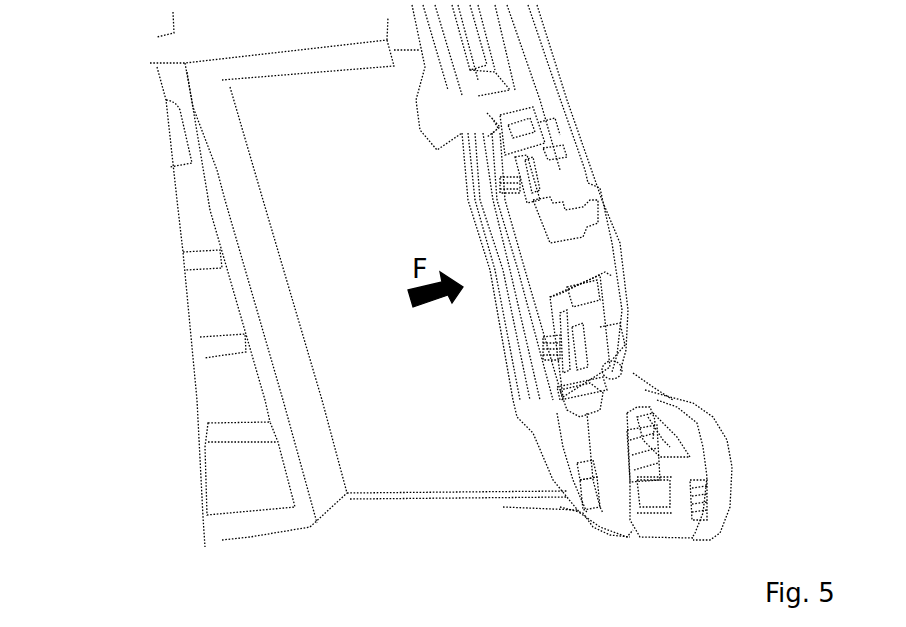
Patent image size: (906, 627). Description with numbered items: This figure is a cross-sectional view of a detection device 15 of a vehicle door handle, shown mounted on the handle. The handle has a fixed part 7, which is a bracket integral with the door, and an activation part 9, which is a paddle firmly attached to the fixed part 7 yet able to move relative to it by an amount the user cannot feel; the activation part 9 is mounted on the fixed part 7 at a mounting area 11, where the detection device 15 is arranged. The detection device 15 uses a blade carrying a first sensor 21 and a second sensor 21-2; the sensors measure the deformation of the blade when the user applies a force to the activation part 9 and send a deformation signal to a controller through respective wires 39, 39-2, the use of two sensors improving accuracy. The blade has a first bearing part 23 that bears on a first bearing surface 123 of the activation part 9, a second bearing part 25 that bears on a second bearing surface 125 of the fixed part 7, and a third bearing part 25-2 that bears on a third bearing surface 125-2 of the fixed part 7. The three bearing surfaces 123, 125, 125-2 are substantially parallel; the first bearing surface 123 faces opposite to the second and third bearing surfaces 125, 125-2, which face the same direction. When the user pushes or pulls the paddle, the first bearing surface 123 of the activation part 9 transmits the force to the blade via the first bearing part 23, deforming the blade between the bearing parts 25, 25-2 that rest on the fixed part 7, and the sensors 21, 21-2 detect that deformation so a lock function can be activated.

The fixed part 7 is at (608, 347).
The activation part 9 is at (512, 432).
The outer wall 11 is at (622, 238).
The first detection device 15 is at (632, 173).
The first sensor 21 is at (535, 173).
The second sensor 21-2 is at (578, 333).
The first bearing part 23 is at (567, 225).
The second bearing part 25 is at (498, 128).
The third bearing part 25-2 is at (553, 388).
The wire 39 is at (510, 185).
The wire 39-2 is at (555, 348).
The first bearing surface 123 is at (553, 305).
The second bearing surface 125 is at (545, 145).
The third bearing surface 125-2 is at (608, 367).